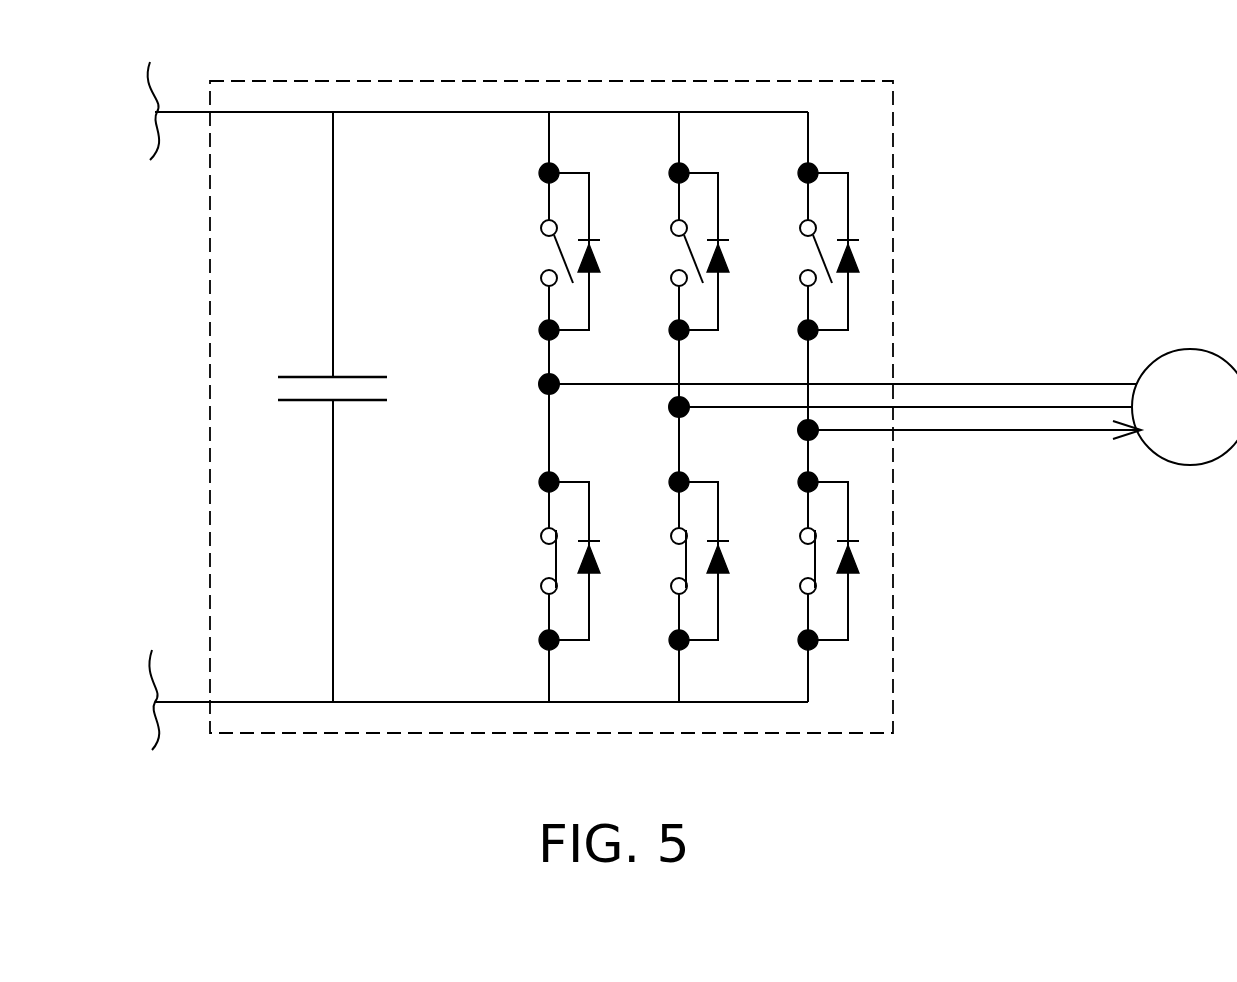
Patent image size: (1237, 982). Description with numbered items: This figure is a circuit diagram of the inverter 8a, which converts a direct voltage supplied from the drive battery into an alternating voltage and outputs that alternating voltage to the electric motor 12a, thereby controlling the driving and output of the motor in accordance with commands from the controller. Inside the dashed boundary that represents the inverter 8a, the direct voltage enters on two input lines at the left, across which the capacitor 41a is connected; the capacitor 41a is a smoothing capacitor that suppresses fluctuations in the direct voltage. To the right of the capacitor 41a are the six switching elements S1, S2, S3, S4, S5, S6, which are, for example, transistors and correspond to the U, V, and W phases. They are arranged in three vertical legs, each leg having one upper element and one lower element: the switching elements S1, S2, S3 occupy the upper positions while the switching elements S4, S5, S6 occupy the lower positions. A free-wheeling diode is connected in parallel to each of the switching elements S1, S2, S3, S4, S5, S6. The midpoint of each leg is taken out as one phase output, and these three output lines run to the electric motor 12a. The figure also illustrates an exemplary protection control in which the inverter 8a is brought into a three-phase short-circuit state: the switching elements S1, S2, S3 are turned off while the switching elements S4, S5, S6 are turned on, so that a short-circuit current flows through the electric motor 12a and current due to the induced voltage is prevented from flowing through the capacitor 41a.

The inverter 8a is at (895, 660).
The capacitor 41a is at (298, 375).
The electric motor 12a is at (1192, 347).
The switching element S1 is at (545, 277).
The switching element S2 is at (675, 277).
The switching element S3 is at (804, 277).
The switching element S4 is at (546, 584).
The switching element S5 is at (676, 584).
The switching element S6 is at (805, 584).